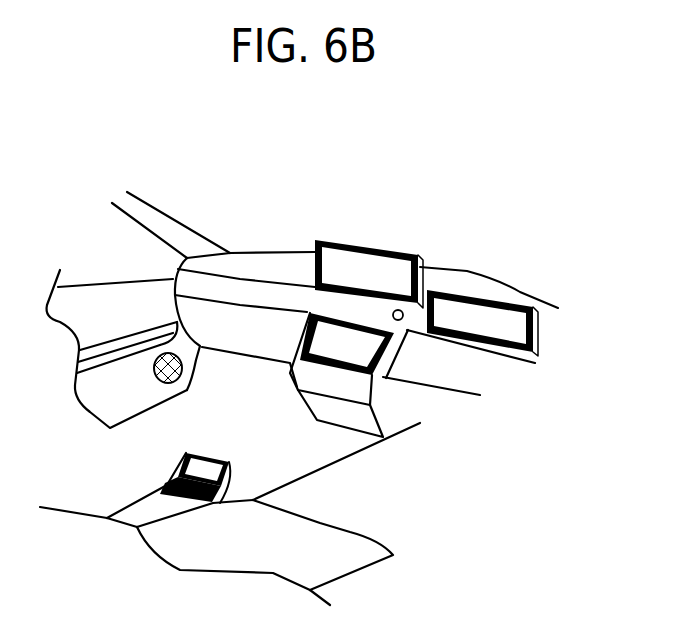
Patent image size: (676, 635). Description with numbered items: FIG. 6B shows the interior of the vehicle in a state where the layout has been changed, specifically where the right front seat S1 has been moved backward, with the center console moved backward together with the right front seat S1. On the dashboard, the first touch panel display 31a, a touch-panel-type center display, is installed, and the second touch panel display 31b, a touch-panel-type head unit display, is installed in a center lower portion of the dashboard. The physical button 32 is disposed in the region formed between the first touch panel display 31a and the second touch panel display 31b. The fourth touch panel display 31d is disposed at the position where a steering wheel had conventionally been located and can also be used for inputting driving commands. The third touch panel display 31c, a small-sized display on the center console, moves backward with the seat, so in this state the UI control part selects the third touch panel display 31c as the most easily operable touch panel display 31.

The touch panel display 31 is at (307, 342).
The first touch panel display 31a is at (377, 248).
The second touch panel display 31b is at (325, 336).
The third touch panel display 31c is at (193, 470).
The fourth touch panel display 31d is at (487, 297).
The physical button 32 is at (427, 277).
The right front seat S1 is at (322, 538).